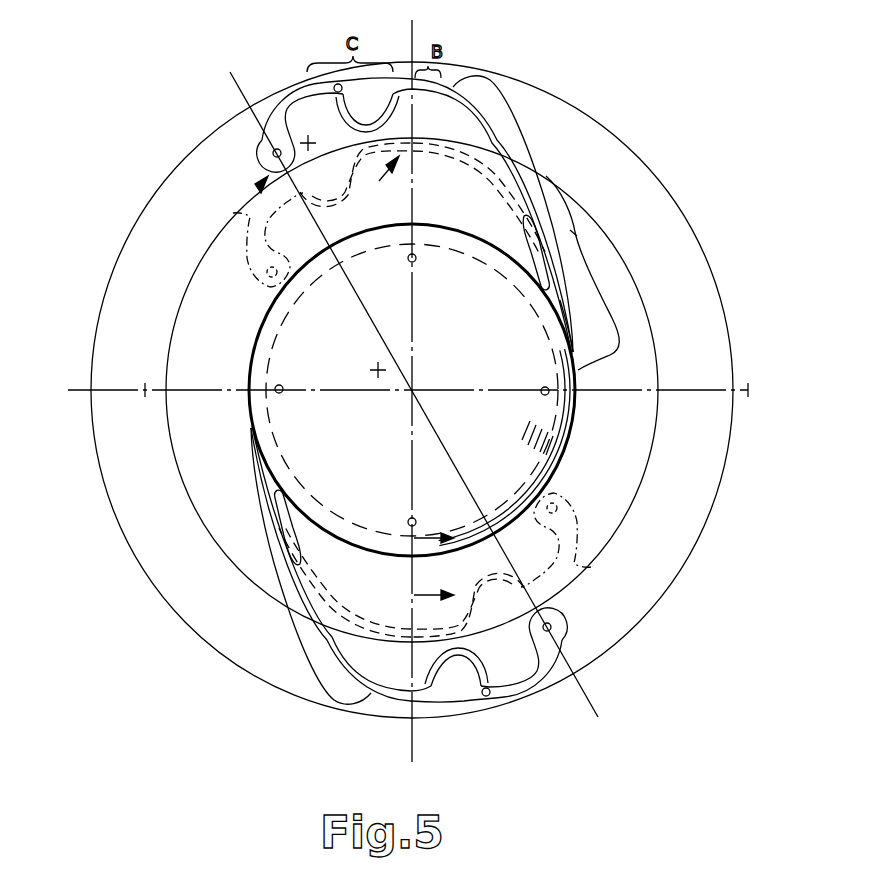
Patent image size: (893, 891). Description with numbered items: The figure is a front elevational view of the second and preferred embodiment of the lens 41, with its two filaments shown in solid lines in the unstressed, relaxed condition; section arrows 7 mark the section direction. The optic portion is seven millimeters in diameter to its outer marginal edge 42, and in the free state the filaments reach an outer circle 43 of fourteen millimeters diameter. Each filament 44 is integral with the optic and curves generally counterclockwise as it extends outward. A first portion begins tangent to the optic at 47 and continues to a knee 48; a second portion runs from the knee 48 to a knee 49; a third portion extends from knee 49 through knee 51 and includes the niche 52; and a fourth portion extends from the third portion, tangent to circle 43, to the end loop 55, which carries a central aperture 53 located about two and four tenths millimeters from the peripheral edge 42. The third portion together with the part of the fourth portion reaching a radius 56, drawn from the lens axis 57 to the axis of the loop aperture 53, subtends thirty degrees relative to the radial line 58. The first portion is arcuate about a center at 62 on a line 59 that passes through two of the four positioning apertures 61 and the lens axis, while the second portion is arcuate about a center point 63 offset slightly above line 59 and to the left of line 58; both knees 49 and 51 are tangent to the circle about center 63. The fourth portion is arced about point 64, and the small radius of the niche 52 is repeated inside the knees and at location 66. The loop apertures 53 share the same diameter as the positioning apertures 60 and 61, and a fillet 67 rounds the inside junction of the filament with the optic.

The section line 7 is at (434, 564).
The lens 41 is at (630, 349).
The outer marginal edge 42 is at (576, 414).
The outer circle 43 is at (564, 684).
The filament 44 is at (377, 184).
The tangent point 47 is at (580, 362).
The knee 48 is at (454, 86).
The knee 49 is at (345, 90).
The knee 51 is at (320, 151).
The niche 52 is at (380, 118).
The central aperture 53 is at (272, 154).
The end loop 55 is at (234, 209).
The radius 56 is at (318, 228).
The lens axis 57 is at (414, 388).
The radial line 58 is at (411, 180).
The line 59 is at (748, 388).
The positioning apertures 60 is at (416, 255).
The positioning apertures 61 is at (275, 386).
The center 62 is at (147, 388).
The center point 63 is at (375, 362).
The center point 64 is at (412, 390).
The location 66 is at (280, 115).
The fillet 67 is at (537, 260).